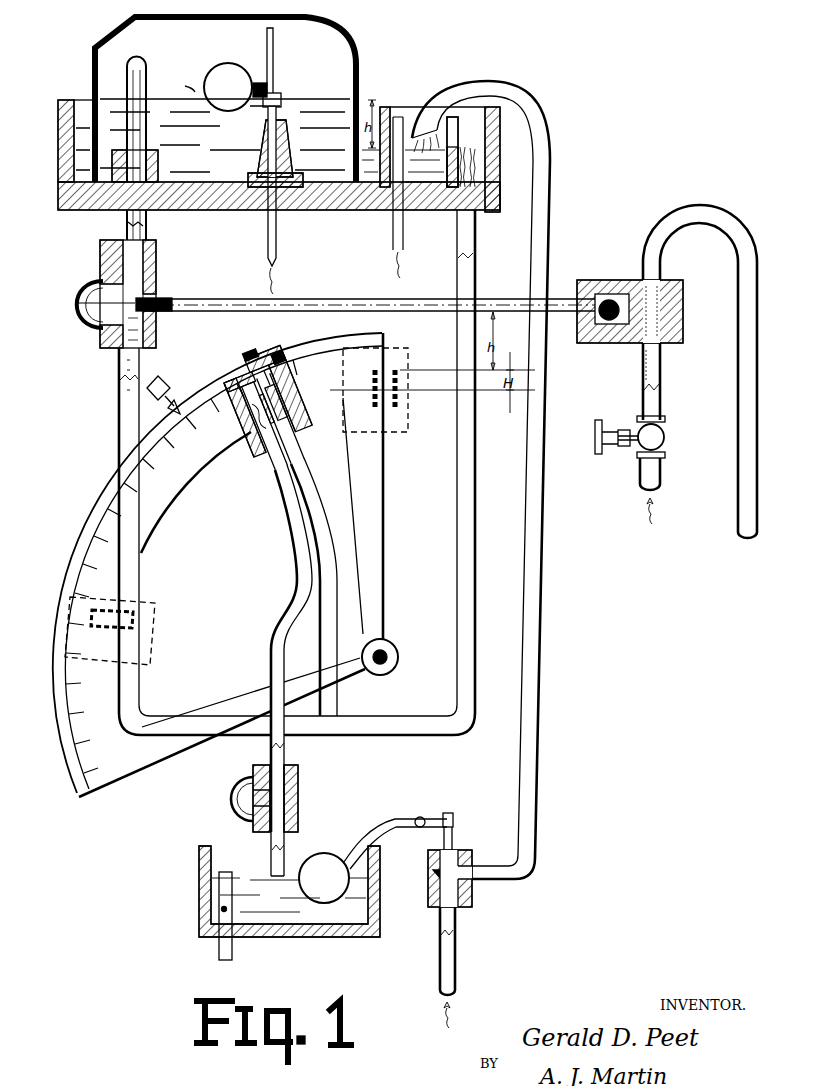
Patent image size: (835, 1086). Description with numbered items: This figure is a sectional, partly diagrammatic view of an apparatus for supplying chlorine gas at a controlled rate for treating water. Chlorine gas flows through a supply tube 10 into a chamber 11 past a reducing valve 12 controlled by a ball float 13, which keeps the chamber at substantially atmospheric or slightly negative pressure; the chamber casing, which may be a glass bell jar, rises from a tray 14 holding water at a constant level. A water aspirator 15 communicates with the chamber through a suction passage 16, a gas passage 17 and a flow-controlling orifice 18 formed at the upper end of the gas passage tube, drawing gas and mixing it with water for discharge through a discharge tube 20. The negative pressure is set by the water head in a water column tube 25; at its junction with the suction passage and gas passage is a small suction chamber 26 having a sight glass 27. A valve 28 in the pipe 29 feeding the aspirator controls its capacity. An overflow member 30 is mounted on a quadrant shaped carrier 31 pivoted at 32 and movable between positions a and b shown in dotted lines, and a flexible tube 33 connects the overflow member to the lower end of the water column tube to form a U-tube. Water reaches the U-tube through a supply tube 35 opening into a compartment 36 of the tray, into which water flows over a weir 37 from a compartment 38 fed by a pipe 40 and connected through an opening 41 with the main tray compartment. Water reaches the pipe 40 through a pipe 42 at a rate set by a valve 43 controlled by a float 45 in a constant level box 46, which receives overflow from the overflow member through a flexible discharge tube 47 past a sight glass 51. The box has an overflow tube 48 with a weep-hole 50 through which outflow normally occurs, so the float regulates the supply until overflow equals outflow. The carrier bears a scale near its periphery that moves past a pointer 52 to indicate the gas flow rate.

The supply tube 10 is at (266, 240).
The chamber 11 is at (341, 66).
The reducing valve 12 is at (273, 34).
The ball float 13 is at (225, 76).
The tray 14 is at (63, 140).
The water aspirator 15 is at (656, 306).
The suction passage 16 is at (326, 306).
The gas passage 17 is at (126, 228).
The flow-controlling orifice 18 is at (139, 60).
The discharge tube 20 is at (750, 333).
The water column tube 25 is at (119, 402).
The suction chamber 26 is at (100, 292).
The sight glass 27 is at (82, 316).
The valve 28 is at (660, 438).
The pipe 29 is at (660, 470).
The overflow member 30 is at (276, 366).
The quadrant shaped carrier 31 is at (379, 346).
The pivot 32 is at (388, 659).
The flexible tube 33 is at (328, 576).
The supply tube 35 is at (466, 462).
The compartment 36 is at (492, 148).
The weir 37 is at (457, 142).
The compartment 38 is at (412, 124).
The pipe 40 is at (534, 253).
The opening 41 is at (366, 210).
The pipe 42 is at (456, 956).
The valve 43 is at (470, 892).
The float 45 is at (342, 840).
The constant level box 46 is at (199, 860).
The flexible discharge tube 47 is at (297, 579).
The overflow tube 48 is at (229, 945).
The weep-hole 50 is at (222, 909).
The sight glass 51 is at (236, 789).
The pointer 52 is at (177, 394).
The position a is at (406, 362).
The position b is at (110, 617).